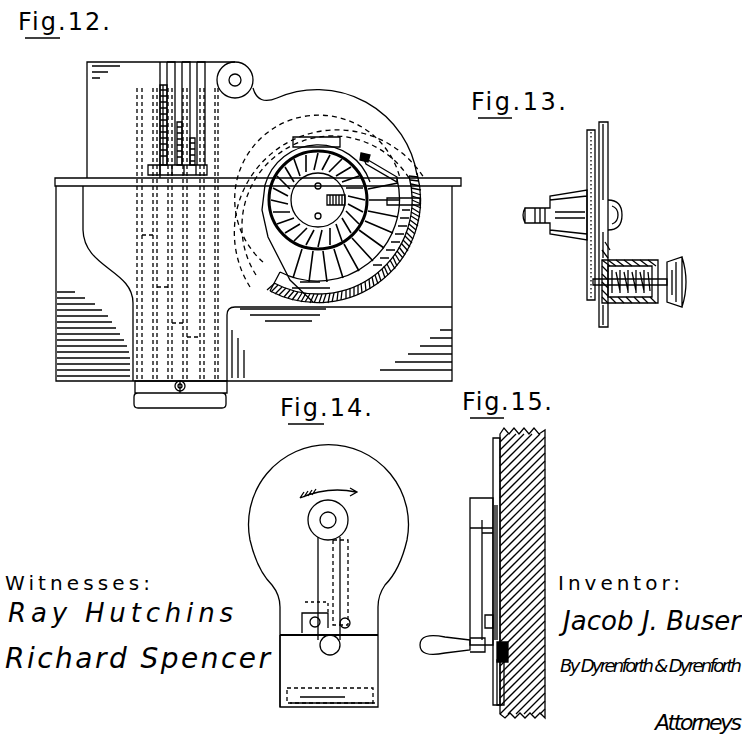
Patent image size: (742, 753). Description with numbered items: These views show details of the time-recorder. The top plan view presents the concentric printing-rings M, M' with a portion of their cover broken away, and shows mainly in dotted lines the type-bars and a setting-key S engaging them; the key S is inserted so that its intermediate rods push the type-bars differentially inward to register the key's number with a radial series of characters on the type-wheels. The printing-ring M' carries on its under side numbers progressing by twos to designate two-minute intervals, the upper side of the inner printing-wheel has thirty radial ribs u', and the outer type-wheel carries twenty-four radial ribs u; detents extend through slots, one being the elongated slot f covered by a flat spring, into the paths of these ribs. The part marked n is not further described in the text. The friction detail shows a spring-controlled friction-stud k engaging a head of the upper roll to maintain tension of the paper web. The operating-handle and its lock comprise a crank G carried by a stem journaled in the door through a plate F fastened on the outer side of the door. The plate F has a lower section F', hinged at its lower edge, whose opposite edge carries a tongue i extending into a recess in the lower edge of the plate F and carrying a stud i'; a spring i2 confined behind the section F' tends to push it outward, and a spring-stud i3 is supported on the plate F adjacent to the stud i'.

In FIG. 12, the setting-key S is at (162, 398).
In FIG. 12, the pivot pin of counter housing n is at (181, 393).
In FIG. 12, the ribs u' is at (318, 200).
In FIG. 12, the elongated slot f is at (312, 186).
In FIG. 12, the printing-ring M' is at (339, 194).
In FIG. 12, the ribs u is at (399, 188).
In FIG. 12, the segment gear M is at (344, 239).
In FIG. 13, the spring-controlled friction-stud k is at (592, 290).
In FIG. 14, the plate F is at (329, 576).
In FIG. 15, the plate F is at (498, 573).
In FIG. 14, the crank G is at (318, 562).
In FIG. 15, the crank G is at (478, 558).
In FIG. 14, the tongue i is at (309, 646).
In FIG. 14, the stud i' is at (291, 610).
In FIG. 14, the spring-stud i3 is at (350, 625).
In FIG. 15, the spring-stud i3 is at (490, 622).
In FIG. 15, the spring i2 is at (498, 650).
In FIG. 14, the lower section F' is at (347, 656).
In FIG. 15, the lower section F' is at (471, 689).